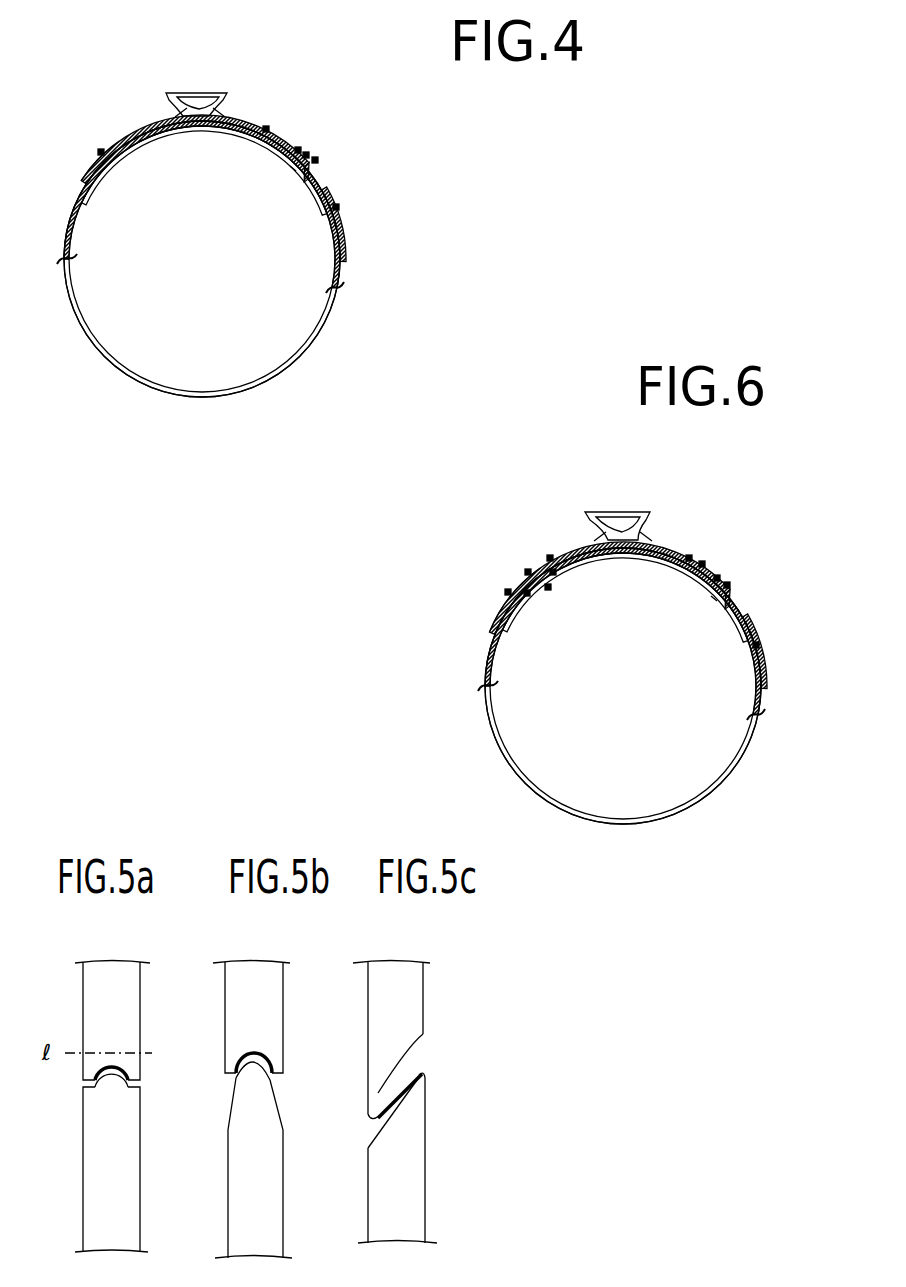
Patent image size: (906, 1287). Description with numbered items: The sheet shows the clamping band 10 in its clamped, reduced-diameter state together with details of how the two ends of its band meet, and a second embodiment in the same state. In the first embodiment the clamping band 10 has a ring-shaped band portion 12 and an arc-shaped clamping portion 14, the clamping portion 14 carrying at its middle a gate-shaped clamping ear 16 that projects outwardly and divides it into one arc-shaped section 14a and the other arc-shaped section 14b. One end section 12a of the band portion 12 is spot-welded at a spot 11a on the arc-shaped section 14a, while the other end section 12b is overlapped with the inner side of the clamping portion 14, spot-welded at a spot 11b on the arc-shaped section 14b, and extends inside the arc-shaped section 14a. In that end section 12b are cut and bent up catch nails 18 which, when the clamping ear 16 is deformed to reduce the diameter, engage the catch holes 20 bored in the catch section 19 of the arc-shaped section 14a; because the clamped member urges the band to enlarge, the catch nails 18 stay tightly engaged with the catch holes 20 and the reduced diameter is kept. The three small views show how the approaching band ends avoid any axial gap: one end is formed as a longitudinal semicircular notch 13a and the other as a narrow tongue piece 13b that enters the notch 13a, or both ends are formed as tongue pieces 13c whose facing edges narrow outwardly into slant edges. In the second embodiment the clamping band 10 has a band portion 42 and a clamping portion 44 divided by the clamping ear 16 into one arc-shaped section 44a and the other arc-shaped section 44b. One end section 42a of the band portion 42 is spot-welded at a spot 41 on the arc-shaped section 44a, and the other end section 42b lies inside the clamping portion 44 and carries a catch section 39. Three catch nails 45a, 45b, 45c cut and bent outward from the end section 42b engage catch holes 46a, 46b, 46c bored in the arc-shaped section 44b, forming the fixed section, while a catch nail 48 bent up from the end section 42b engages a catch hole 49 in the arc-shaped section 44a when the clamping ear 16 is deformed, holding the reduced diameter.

In FIG. 4, the clamping band 10 is at (100, 372).
In FIG. 6, the clamping band 10 is at (437, 505).
In FIG. 4, the spot 11a is at (340, 207).
In FIG. 4, the spot 11b is at (103, 152).
In FIG. 4, the band portion 12 is at (272, 380).
In FIG. 4, the one end section 12a is at (315, 205).
In FIG. 5A, the one end section 12a is at (112, 973).
In FIG. 5B, the one end section 12a is at (258, 972).
In FIG. 5C, the one end section 12a is at (395, 972).
In FIG. 4, the other end section 12b is at (236, 133).
In FIG. 5A, the other end section 12b is at (88, 1137).
In FIG. 5B, the other end section 12b is at (232, 1182).
In FIG. 5C, the other end section 12b is at (375, 1187).
In FIG. 5A, the semicircular notch 13a is at (105, 1064).
In FIG. 5B, the semicircular notch 13a is at (270, 1065).
In FIG. 5A, the narrow tongue piece 13b is at (112, 1080).
In FIG. 5B, the narrow tongue piece 13b is at (270, 1085).
In FIG. 5C, the tongue piece 13c is at (420, 1040).
In FIG. 4, the clamping portion 14 is at (235, 118).
In FIG. 4, the one arc-shaped section 14a is at (347, 240).
In FIG. 4, the other arc-shaped section 14b is at (130, 128).
In FIG. 4, the clamping ear 16 is at (196, 90).
In FIG. 6, the clamping ear 16 is at (640, 514).
In FIG. 4, the catch nail 18 is at (300, 150).
In FIG. 4, the catch section 19 is at (287, 168).
In FIG. 4, the catch hole 20 is at (268, 130).
In FIG. 6, the catch section 39 is at (708, 598).
In FIG. 6, the spot 41 is at (758, 645).
In FIG. 6, the band portion 42 is at (570, 815).
In FIG. 6, the one end section 42a is at (742, 628).
In FIG. 6, the other end section 42b is at (667, 552).
In FIG. 6, the clamping portion 44 is at (668, 543).
In FIG. 6, the one arc-shaped section 44a is at (752, 617).
In FIG. 6, the other arc-shaped section 44b is at (570, 542).
In FIG. 6, the catch nail 45a is at (508, 592).
In FIG. 6, the catch nail 45b is at (528, 572).
In FIG. 6, the catch nail 45c is at (550, 558).
In FIG. 6, the catch hole 46a is at (527, 593).
In FIG. 6, the catch hole 46b is at (548, 587).
In FIG. 6, the catch hole 46c is at (553, 572).
In FIG. 6, the catch nail 48 is at (703, 563).
In FIG. 6, the catch hole 49 is at (690, 557).